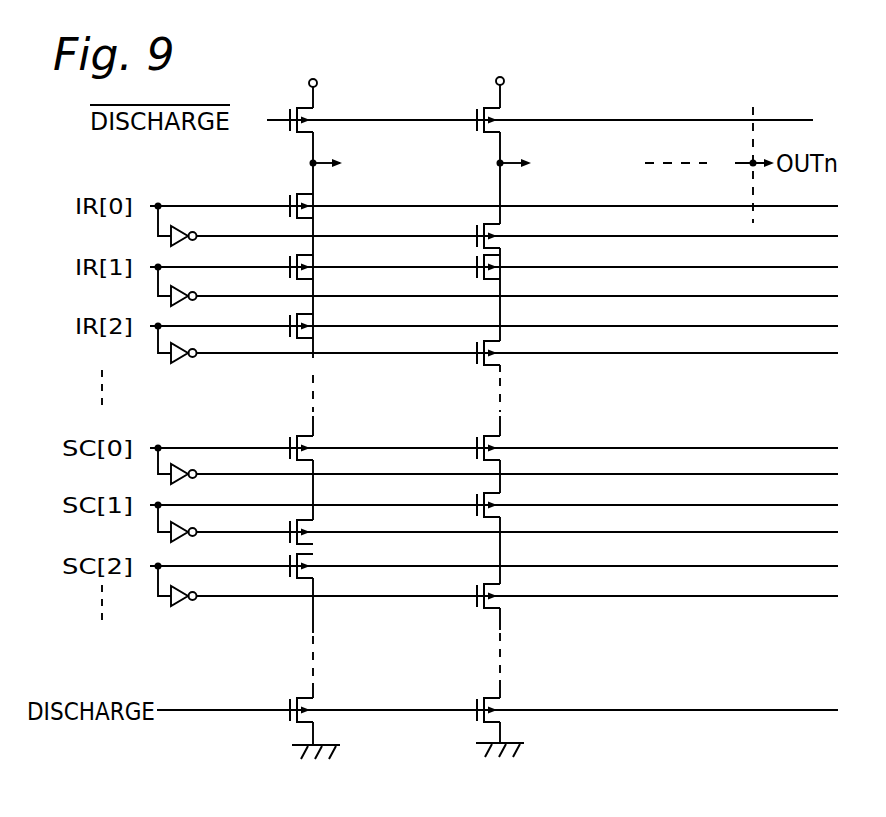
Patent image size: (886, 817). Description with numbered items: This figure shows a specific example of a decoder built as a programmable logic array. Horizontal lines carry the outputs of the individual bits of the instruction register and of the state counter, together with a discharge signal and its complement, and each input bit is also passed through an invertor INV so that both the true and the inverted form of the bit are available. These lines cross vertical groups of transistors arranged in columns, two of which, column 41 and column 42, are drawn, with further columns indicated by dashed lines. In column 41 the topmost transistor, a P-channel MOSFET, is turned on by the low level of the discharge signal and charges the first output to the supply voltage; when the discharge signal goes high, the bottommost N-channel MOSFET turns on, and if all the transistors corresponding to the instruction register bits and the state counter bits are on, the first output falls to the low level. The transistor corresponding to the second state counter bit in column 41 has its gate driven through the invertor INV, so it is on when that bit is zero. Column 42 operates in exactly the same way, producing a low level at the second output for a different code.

The column 41 is at (316, 759).
The column 42 is at (501, 759).
The invertor INV is at (173, 605).